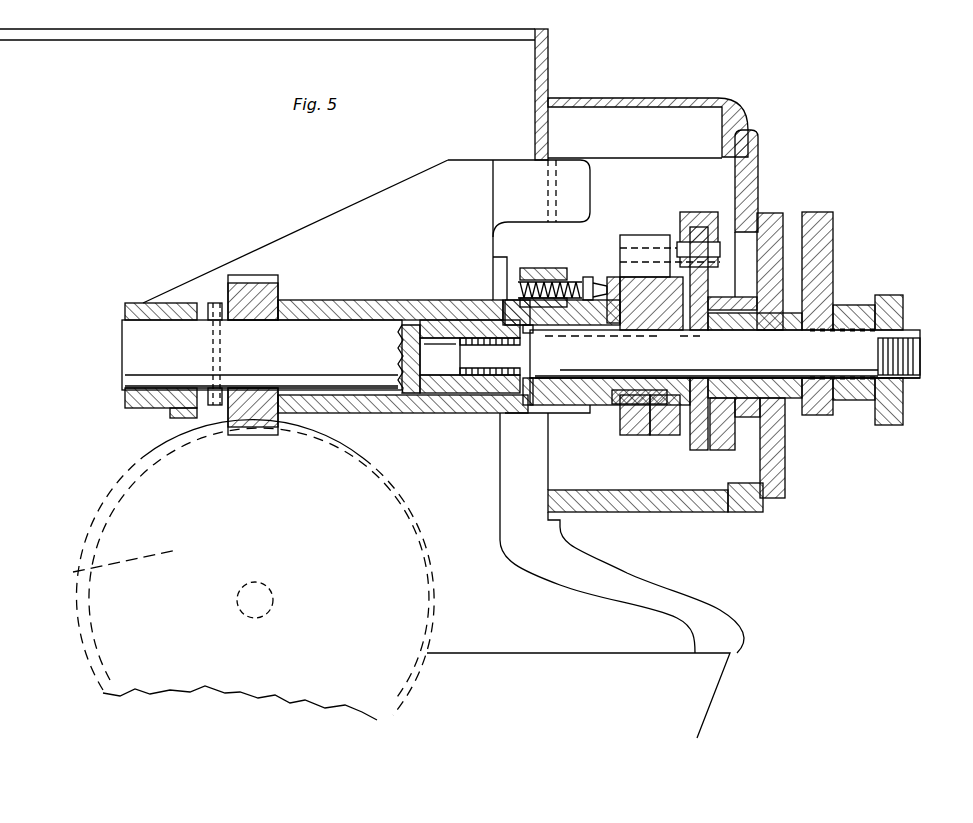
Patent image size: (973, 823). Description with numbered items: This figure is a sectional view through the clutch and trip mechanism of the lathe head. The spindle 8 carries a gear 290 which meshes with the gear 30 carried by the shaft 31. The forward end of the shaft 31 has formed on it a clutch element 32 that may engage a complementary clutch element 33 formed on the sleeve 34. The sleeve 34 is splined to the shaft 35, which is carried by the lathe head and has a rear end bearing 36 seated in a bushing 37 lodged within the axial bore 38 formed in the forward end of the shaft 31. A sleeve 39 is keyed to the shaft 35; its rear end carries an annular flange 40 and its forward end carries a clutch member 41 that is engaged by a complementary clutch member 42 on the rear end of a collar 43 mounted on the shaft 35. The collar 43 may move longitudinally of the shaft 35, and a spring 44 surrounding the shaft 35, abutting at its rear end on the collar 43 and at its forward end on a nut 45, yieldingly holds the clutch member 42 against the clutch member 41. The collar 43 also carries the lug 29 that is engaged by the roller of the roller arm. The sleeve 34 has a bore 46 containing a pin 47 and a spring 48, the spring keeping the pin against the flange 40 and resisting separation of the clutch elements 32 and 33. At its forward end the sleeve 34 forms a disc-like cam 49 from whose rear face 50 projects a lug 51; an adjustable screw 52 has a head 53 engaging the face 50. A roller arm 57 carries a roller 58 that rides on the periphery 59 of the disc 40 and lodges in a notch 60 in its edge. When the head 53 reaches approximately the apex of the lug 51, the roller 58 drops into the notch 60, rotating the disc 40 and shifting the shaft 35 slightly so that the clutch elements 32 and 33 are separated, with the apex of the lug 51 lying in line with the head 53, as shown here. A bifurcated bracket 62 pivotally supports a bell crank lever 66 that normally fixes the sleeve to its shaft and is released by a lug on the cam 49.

The spindle 8 is at (250, 608).
The lug 29 is at (825, 223).
The gear 30 is at (212, 423).
The shaft 31 is at (163, 355).
The clutch element 32 is at (505, 412).
The clutch element 33 is at (523, 400).
The sleeve 34 is at (537, 400).
The shaft 35 is at (865, 365).
The rear end bearing 36 is at (480, 412).
The bushing 37 is at (453, 412).
The axial bore 38 is at (418, 412).
The sleeve 39 is at (708, 432).
The annular flange 40 is at (735, 446).
The clutch member 41 is at (783, 395).
The clutch member 42 is at (810, 418).
The collar 43 is at (845, 305).
The spring 44 is at (880, 300).
The nut 45 is at (913, 388).
The bore 46 is at (648, 440).
The pin 47 is at (680, 440).
The spring 48 is at (660, 410).
The cam 49 is at (687, 212).
The rear face 50 is at (690, 600).
The lug 51 is at (630, 280).
The adjustable screw 52 is at (550, 270).
The head 53 is at (598, 277).
The roller arm 57 is at (745, 127).
The roller 58 is at (718, 224).
The periphery 59 is at (763, 503).
The notch 60 is at (763, 220).
The bifurcated bracket 62 is at (682, 245).
The bell crank lever 66 is at (655, 240).
The gear 290 is at (223, 570).